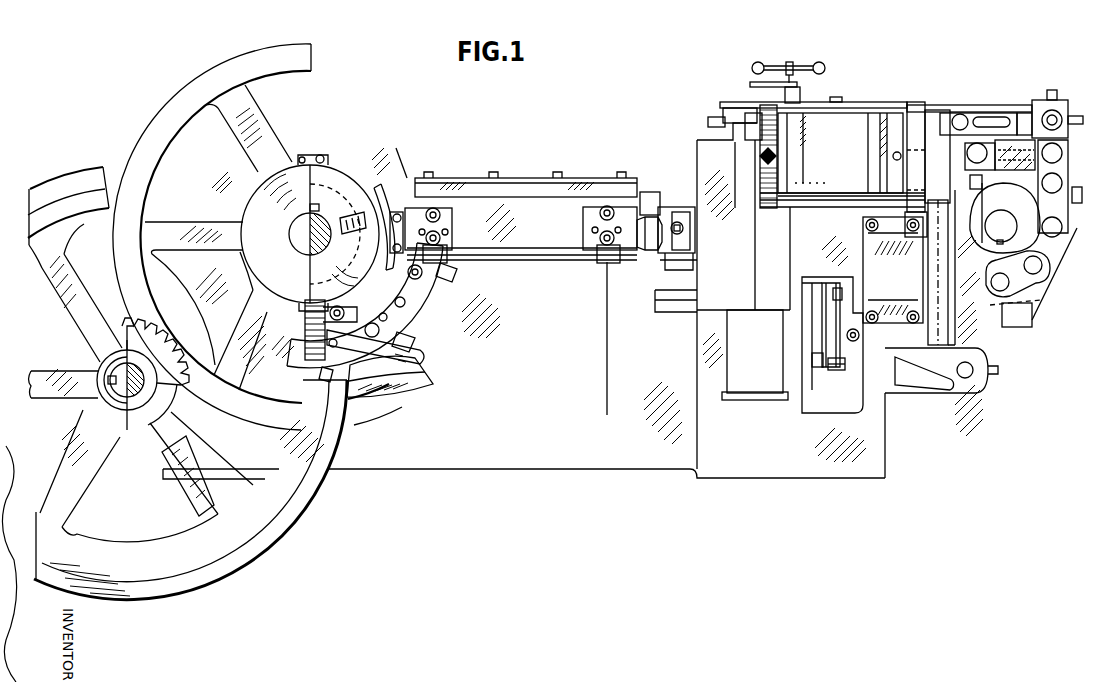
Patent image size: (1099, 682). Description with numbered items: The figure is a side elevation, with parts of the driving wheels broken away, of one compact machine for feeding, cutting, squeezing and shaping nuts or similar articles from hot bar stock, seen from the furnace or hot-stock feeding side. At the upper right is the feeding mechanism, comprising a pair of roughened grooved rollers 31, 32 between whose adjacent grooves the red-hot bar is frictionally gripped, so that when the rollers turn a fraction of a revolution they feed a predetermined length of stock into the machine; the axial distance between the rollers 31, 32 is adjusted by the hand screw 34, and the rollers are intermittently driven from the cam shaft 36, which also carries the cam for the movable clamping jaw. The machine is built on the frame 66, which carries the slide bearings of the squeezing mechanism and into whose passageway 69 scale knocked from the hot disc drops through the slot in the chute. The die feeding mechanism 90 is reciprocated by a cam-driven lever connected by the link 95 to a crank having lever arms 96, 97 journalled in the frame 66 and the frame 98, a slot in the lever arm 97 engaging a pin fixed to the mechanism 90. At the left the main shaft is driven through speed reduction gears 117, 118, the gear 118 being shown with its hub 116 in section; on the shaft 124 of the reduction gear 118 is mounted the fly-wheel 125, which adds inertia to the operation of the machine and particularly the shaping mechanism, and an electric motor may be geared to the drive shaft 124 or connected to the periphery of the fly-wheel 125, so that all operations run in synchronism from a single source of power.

The feeding roller 31 is at (773, 130).
The feeding roller 32 is at (768, 208).
The hand screw 34 is at (825, 68).
The cam shaft 36 is at (998, 223).
The frame 66 is at (564, 354).
The passageway 69 is at (768, 356).
The die feeding mechanism 90 is at (694, 231).
The link 95 is at (839, 371).
The lever arm 96 is at (828, 313).
The lever arm 97 is at (664, 263).
The frame 98 is at (684, 312).
The hub 116 is at (311, 270).
The speed reduction gear 117 is at (433, 384).
The speed reduction gear 118 is at (184, 337).
The shaft 124 is at (130, 398).
The fly-wheel 125 is at (283, 527).